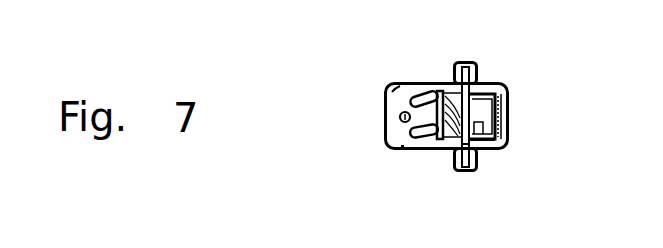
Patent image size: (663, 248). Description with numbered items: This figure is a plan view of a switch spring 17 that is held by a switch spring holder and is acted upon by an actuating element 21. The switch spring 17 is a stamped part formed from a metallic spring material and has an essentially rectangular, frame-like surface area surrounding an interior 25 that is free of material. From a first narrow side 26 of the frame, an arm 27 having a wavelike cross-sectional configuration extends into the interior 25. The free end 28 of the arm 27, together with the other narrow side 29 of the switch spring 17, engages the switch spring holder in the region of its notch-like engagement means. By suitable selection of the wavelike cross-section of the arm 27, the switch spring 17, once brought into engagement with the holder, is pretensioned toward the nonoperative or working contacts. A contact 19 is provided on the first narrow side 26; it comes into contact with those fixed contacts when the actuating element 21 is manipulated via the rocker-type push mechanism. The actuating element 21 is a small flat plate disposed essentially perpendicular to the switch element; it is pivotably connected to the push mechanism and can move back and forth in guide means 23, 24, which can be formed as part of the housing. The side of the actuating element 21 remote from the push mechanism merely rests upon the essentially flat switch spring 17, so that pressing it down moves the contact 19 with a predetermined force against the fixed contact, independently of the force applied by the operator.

The switch spring 17 is at (402, 146).
The contact 19 is at (400, 118).
The actuating element 21 is at (476, 148).
The guide means 23 is at (477, 63).
The guide means 24 is at (457, 167).
The interior 25 is at (441, 88).
The narrow side 26 is at (393, 92).
The arm 27 is at (413, 97).
The free end 28 is at (504, 88).
The other narrow side 29 is at (505, 114).